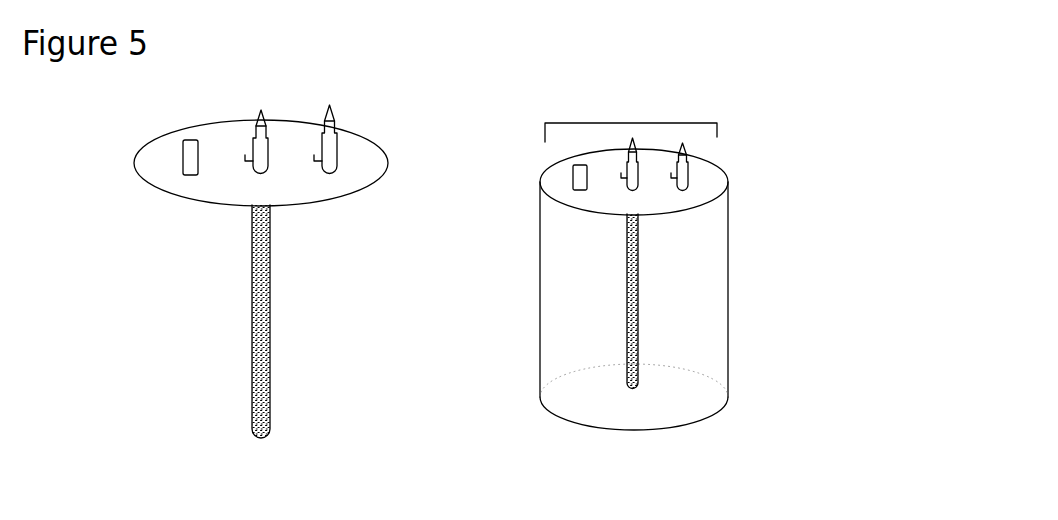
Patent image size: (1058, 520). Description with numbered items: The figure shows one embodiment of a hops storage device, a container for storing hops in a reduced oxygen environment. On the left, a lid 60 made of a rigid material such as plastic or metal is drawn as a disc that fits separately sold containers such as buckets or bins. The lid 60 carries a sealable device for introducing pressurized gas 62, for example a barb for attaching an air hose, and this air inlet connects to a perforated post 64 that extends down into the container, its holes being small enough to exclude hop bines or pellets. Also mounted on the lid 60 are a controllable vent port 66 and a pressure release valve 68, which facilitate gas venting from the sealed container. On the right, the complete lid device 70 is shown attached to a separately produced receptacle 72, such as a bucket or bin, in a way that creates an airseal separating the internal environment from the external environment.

The lid 60 is at (137, 171).
The sealable device for introducing pressurized gas 62 is at (262, 104).
The perforated post 64 is at (245, 343).
The controllable vent port 66 is at (245, 142).
The pressure release valve 68 is at (187, 178).
The lid device 70 is at (627, 123).
The receptacle 72 is at (528, 277).